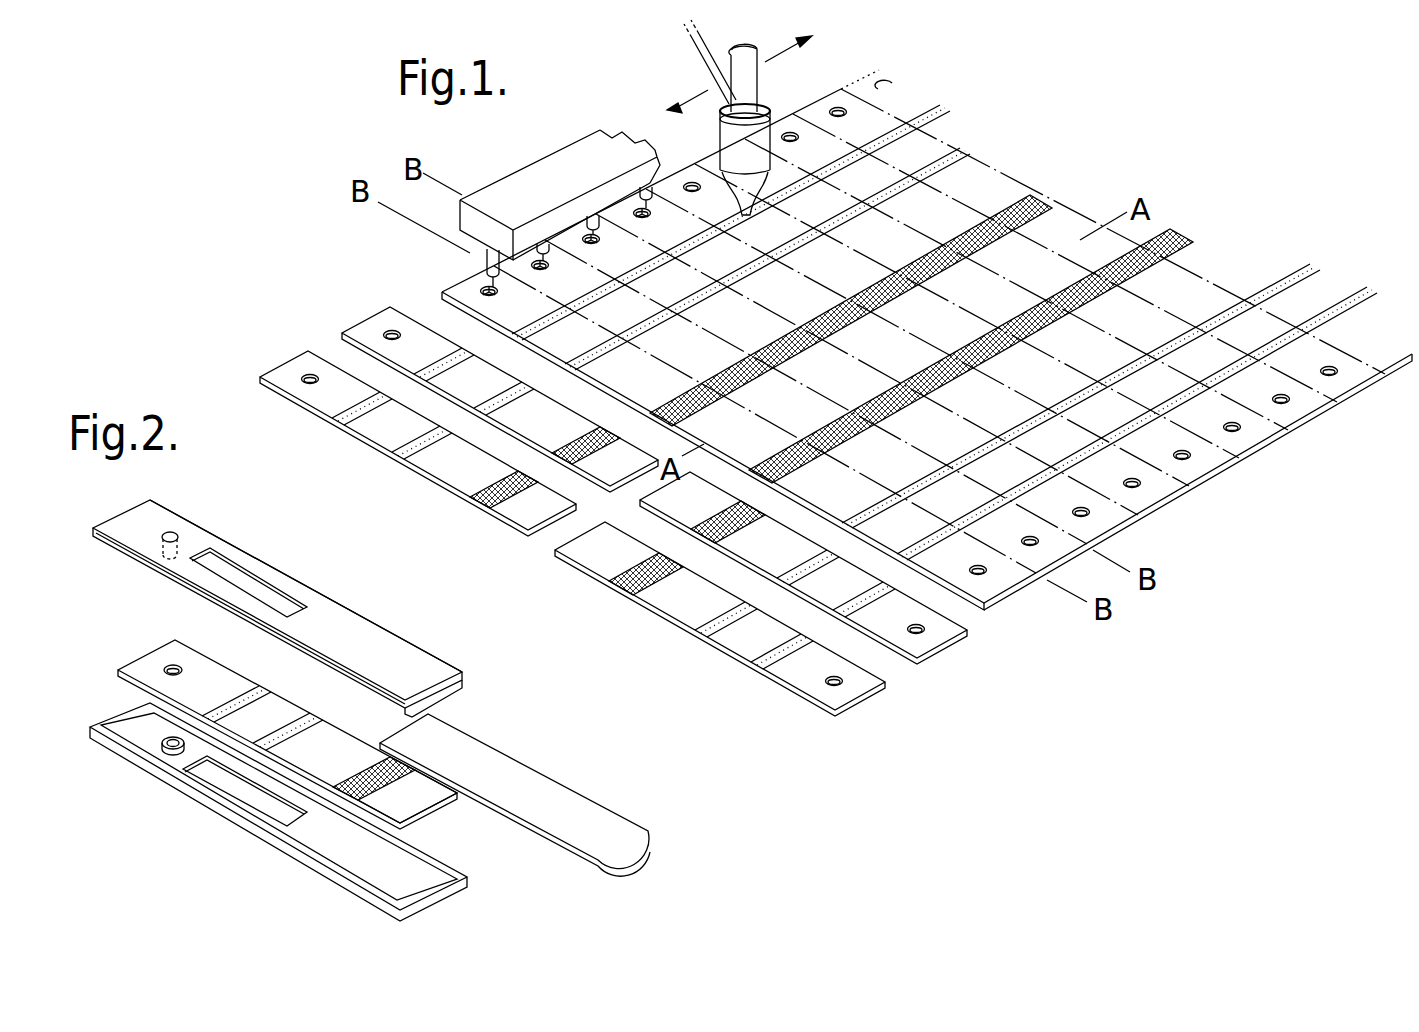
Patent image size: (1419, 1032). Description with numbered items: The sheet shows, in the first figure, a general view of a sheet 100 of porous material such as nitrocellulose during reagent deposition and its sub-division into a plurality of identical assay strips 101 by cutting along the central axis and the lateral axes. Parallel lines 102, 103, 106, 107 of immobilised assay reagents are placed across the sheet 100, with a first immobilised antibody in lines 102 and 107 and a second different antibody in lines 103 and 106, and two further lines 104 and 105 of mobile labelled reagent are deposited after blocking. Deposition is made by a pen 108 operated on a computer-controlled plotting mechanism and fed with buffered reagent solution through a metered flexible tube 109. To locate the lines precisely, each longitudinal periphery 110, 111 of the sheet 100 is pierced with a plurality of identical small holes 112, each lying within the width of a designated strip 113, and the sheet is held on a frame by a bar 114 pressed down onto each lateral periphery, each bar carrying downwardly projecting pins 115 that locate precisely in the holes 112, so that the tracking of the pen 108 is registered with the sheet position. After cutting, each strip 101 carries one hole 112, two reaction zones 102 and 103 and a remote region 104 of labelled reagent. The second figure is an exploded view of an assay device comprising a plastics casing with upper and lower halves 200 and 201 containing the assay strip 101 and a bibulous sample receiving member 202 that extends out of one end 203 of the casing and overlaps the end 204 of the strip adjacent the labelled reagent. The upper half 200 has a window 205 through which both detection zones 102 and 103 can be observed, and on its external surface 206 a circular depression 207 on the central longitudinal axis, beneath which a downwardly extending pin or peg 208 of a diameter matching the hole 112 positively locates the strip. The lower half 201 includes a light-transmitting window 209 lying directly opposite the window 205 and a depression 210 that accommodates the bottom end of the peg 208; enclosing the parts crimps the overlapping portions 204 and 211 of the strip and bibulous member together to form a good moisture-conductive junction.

In FIG. 1, the sheet 100 is at (1318, 398).
In FIG. 1, the assay strip 101 is at (940, 657).
In FIG. 2, the assay strip 101 is at (312, 740).
In FIG. 1, the reagent line 102 is at (458, 352).
In FIG. 2, the reagent line 102 is at (222, 695).
In FIG. 1, the reagent line 103 is at (517, 383).
In FIG. 2, the reagent line 103 is at (272, 735).
In FIG. 1, the line of mobile labelled reagent 104 is at (600, 436).
In FIG. 2, the line of mobile labelled reagent 104 is at (362, 765).
In FIG. 1, the line of mobile labelled reagent 105 is at (728, 520).
In FIG. 1, the reagent line 106 is at (820, 570).
In FIG. 1, the reagent line 107 is at (868, 602).
In FIG. 1, the pen 108 is at (730, 138).
In FIG. 1, the metered flexible tube 109 is at (710, 80).
In FIG. 1, the longitudinal periphery 110 is at (825, 82).
In FIG. 1, the longitudinal periphery 111 is at (1265, 450).
In FIG. 1, the hole 112 is at (392, 330).
In FIG. 2, the hole 112 is at (170, 667).
In FIG. 1, the designated strip 113 is at (957, 550).
In FIG. 1, the bar 114 is at (553, 172).
In FIG. 1, the pin 115 is at (485, 258).
In FIG. 2, the upper half of casing 200 is at (380, 640).
In FIG. 2, the lower half of casing 201 is at (325, 856).
In FIG. 2, the bibulous sample receiving member 202 is at (612, 812).
In FIG. 2, the end of casing 203 is at (468, 676).
In FIG. 2, the end of assay strip 204 is at (402, 805).
In FIG. 2, the window 205 is at (265, 580).
In FIG. 2, the external surface 206 is at (167, 518).
In FIG. 2, the circular depression 207 is at (180, 536).
In FIG. 2, the pin or peg 208 is at (134, 562).
In FIG. 2, the light-transmitting window 209 is at (237, 793).
In FIG. 2, the depression 210 is at (168, 740).
In FIG. 2, the overlapping portion of bibulous member 211 is at (462, 792).